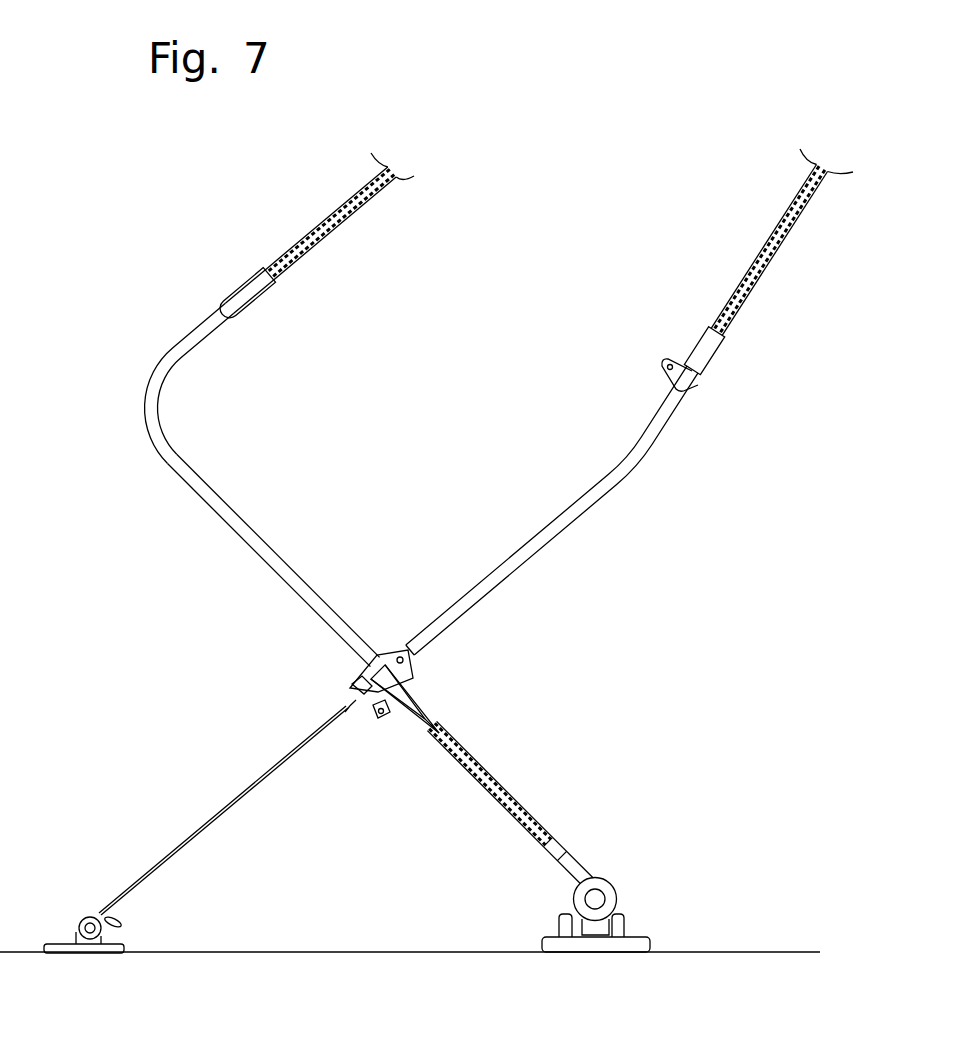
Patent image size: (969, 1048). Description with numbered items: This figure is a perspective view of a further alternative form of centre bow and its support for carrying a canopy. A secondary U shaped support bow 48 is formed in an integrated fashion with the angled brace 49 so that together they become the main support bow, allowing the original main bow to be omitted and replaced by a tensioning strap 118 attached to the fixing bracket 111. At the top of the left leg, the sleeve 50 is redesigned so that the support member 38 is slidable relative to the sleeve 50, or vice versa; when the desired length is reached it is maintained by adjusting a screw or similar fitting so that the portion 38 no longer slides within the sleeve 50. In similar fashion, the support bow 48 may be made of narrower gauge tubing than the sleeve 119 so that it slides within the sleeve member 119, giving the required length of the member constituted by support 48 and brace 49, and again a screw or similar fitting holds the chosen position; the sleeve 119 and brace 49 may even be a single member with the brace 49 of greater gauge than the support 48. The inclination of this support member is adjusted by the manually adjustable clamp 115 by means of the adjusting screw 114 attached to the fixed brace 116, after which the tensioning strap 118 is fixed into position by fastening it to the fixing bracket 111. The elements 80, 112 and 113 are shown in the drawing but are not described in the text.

The support member 38 is at (183, 353).
The secondary U shaped support bow 48 is at (258, 533).
The angled brace 49 is at (517, 797).
The sleeve 50 is at (758, 290).
The ground surface 80 is at (407, 952).
The fixing bracket 111 is at (78, 928).
The tube end section 112 is at (247, 278).
The upper left tube 113 is at (297, 263).
The adjusting screw 114 is at (597, 898).
The manually adjustable clamp 115 is at (618, 897).
The fixed brace 116 is at (652, 938).
The tensioning strap 118 is at (245, 800).
The sleeve member 119 is at (255, 295).